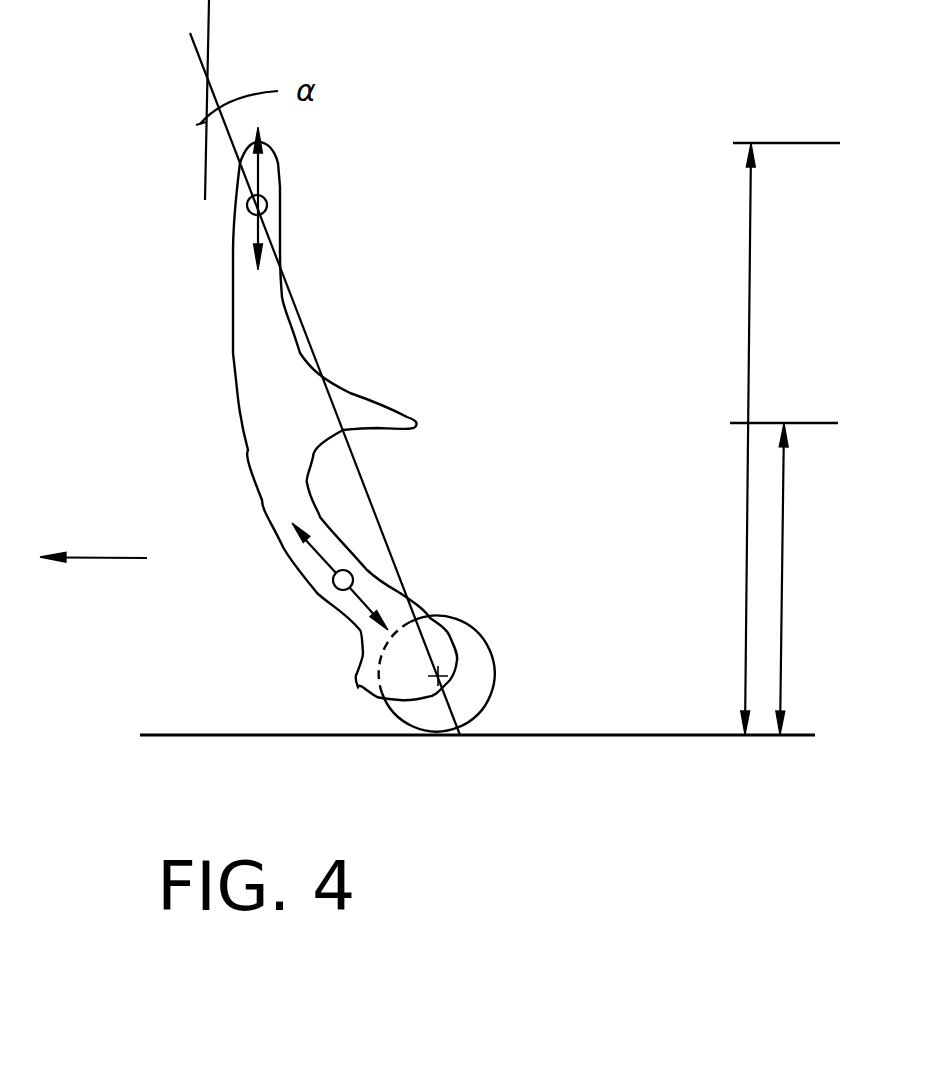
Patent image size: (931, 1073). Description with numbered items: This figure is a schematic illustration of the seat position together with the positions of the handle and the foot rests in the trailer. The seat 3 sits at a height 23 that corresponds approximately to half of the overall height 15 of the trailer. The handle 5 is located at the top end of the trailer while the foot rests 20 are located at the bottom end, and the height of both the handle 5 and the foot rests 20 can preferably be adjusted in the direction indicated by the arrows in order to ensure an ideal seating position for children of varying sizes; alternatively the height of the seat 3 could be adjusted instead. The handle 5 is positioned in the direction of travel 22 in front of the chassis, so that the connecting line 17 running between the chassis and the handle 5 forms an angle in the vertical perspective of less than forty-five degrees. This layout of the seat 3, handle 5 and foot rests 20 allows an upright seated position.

The seat 3 is at (400, 415).
The handle 5 is at (267, 205).
The overall height 15 is at (786, 439).
The connecting line 17 is at (307, 333).
The foot rests 20 is at (353, 580).
The direction of travel 22 is at (93, 529).
The height of the seat 23 is at (793, 579).